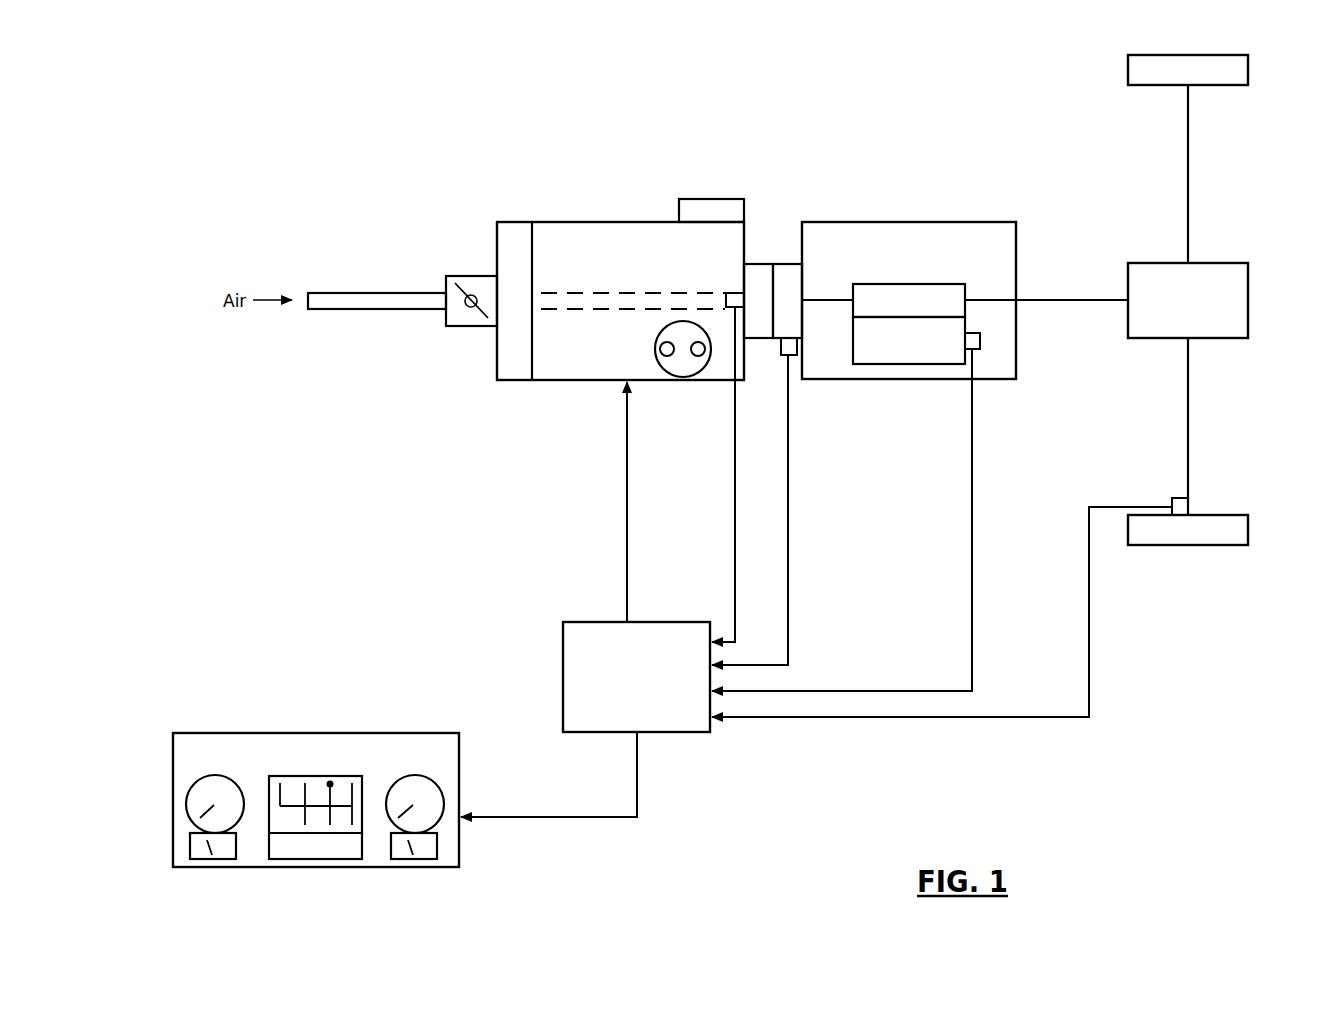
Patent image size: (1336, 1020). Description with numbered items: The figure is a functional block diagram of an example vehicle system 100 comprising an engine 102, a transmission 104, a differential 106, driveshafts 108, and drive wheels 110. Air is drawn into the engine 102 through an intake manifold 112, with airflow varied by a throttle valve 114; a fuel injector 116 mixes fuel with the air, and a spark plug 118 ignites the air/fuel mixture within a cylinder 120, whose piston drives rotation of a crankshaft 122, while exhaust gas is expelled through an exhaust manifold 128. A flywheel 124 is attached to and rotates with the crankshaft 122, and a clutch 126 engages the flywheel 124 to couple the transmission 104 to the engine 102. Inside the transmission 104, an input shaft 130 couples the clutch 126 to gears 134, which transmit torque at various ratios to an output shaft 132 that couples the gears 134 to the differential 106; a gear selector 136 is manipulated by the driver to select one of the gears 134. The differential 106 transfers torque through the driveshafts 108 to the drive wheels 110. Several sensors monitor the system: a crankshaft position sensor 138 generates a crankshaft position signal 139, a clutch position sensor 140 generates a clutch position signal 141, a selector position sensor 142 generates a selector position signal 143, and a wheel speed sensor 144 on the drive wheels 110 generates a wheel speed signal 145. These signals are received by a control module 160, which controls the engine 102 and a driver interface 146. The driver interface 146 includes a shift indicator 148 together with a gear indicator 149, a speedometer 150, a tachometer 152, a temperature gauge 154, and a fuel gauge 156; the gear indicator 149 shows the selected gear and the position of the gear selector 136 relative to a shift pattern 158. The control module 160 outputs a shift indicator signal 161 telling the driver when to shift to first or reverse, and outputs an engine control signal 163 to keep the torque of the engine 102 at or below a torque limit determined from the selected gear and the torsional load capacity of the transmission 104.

The vehicle system 100 is at (163, 97).
The engine 102 is at (637, 222).
The transmission 104 is at (907, 222).
The differential 106 is at (1248, 300).
The driveshafts 108 is at (1188, 180).
The drive wheels 110 is at (1248, 70).
The intake manifold 112 is at (520, 222).
The throttle valve 114 is at (475, 276).
The fuel injector 116 is at (655, 349).
The spark plug 118 is at (698, 356).
The cylinder 120 is at (659, 347).
The crankshaft 122 is at (612, 290).
The flywheel 124 is at (758, 264).
The clutch 126 is at (787, 264).
The exhaust manifold 128 is at (703, 199).
The input shaft 130 is at (822, 300).
The output shaft 132 is at (1072, 300).
The gears 134 is at (907, 284).
The gear selector 136 is at (910, 364).
The crankshaft position sensor 138 is at (732, 293).
The crankshaft position signal 139 is at (734, 530).
The clutch position sensor 140 is at (785, 356).
The clutch position signal 141 is at (788, 573).
The selector position sensor 142 is at (977, 349).
The selector position signal 143 is at (971, 573).
The wheel speed sensor 144 is at (1178, 498).
The wheel speed signal 145 is at (1090, 675).
The driver interface 146 is at (315, 733).
The shift indicator 148 is at (315, 859).
The gear indicator 149 is at (362, 782).
The speedometer 150 is at (186, 804).
The tachometer 152 is at (444, 804).
The temperature gauge 154 is at (190, 846).
The fuel gauge 156 is at (437, 846).
The shift pattern 158 is at (292, 808).
The control module 160 is at (590, 622).
The shift indicator signal 161 is at (576, 817).
The engine control signal 163 is at (627, 557).